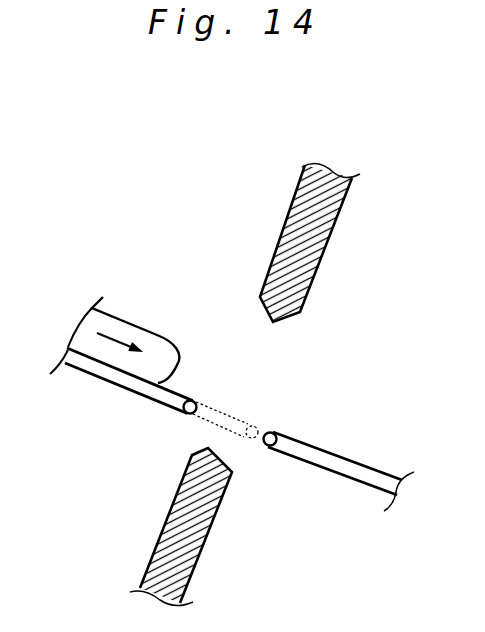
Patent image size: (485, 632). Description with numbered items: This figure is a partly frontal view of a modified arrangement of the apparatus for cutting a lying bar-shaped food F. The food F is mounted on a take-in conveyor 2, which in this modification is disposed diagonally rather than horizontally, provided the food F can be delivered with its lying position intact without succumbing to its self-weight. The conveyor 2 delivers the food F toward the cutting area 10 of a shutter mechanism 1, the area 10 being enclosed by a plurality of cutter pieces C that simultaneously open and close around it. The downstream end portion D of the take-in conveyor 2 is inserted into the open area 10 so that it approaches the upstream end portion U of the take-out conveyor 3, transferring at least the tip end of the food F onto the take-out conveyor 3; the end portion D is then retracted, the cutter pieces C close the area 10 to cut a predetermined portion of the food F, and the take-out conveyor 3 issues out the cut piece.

The shutter mechanism 1 is at (350, 237).
The take-in conveyor 2 is at (97, 396).
The take-out conveyor 3 is at (356, 444).
The cutting area 10 is at (233, 336).
The cutter pieces C is at (303, 267).
The downstream end portion D is at (172, 425).
The upstream end portion U is at (291, 418).
The bar-shaped food F is at (111, 326).